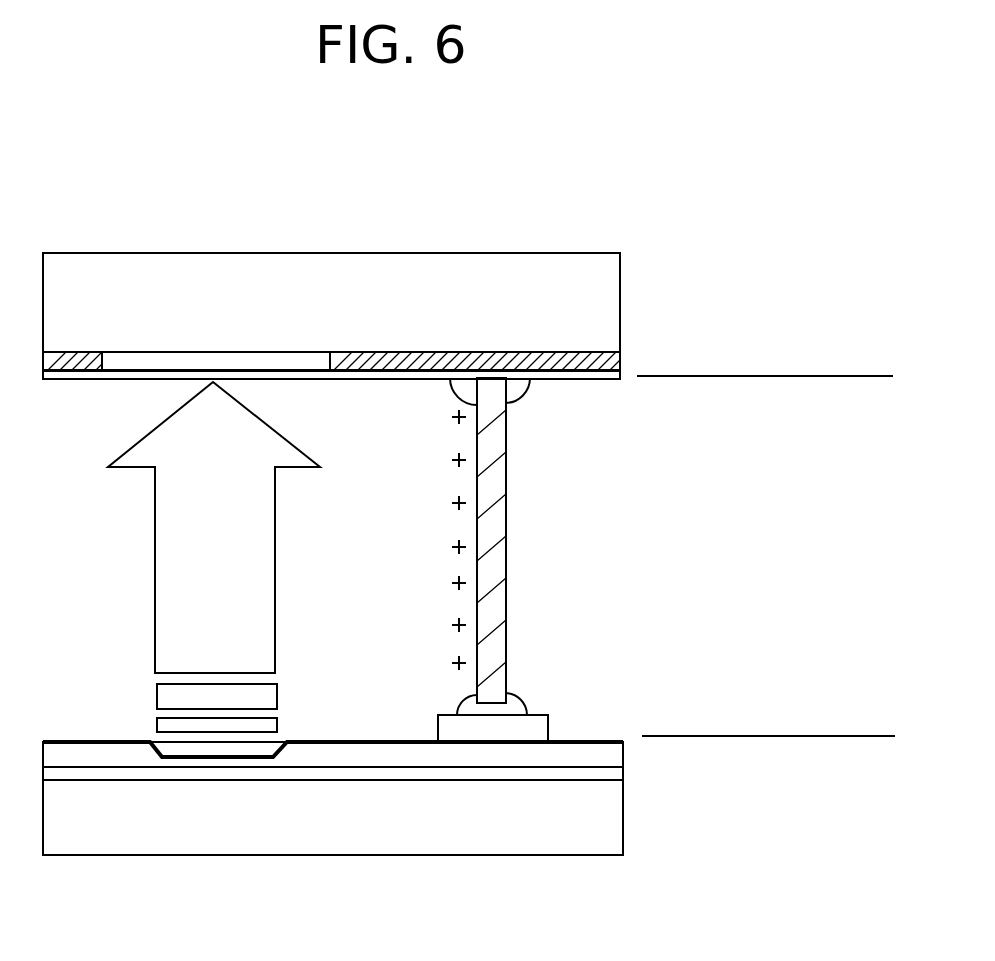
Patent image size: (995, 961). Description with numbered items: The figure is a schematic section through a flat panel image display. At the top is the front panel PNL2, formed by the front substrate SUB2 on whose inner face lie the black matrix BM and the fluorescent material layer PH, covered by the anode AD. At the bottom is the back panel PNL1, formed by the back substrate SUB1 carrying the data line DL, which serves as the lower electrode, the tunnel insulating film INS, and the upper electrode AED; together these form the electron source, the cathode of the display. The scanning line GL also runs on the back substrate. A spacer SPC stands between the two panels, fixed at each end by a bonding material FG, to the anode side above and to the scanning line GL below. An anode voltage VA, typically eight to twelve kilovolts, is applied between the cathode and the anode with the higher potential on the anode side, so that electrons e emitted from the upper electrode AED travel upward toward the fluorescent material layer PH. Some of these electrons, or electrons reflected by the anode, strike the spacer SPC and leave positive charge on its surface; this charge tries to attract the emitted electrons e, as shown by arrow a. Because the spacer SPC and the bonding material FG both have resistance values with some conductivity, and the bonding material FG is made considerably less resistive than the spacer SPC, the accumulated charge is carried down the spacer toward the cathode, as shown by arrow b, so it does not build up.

The fluorescent material layer PH is at (216, 362).
The black matrix BM is at (397, 362).
The front substrate SUB2 is at (563, 268).
The front panel PNL2 is at (690, 243).
The anode AD is at (80, 381).
The bonding material FG is at (527, 391).
The anode voltage VA is at (797, 736).
The spacer SPC is at (507, 593).
The upper electrode AED is at (108, 742).
The scanning line GL is at (543, 726).
The back panel PNL1 is at (668, 708).
The data line serving as lower electrode DL is at (110, 776).
The tunnel insulating film INS is at (223, 764).
The back substrate SUB1 is at (505, 840).
The electrons e is at (170, 597).
The arrow a is at (240, 568).
The arrow b is at (428, 445).